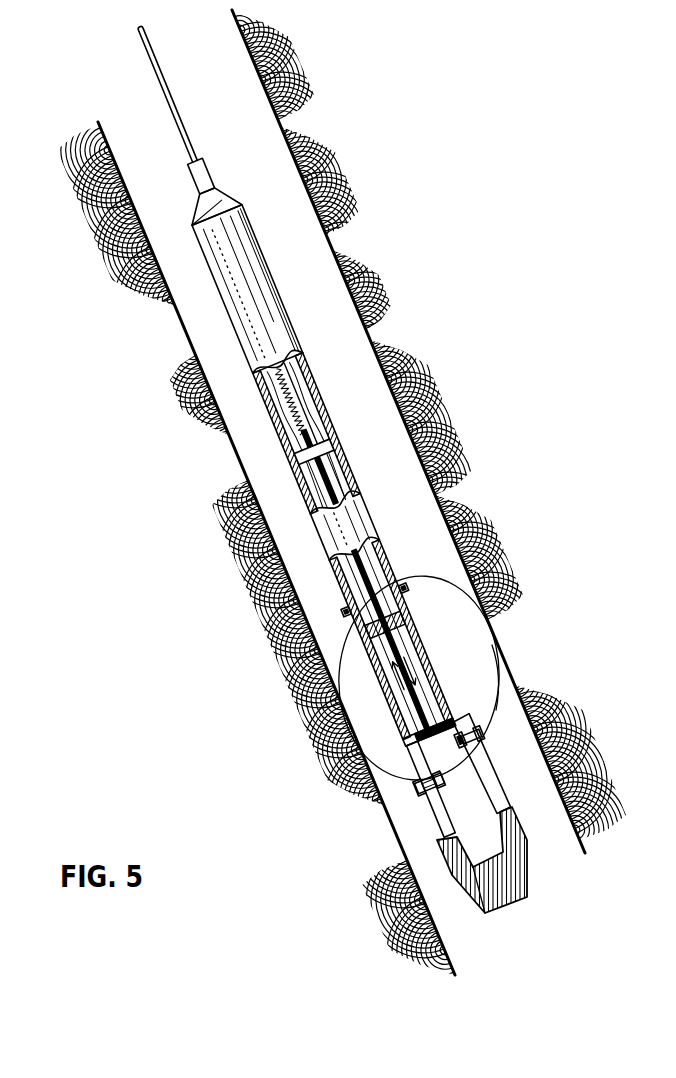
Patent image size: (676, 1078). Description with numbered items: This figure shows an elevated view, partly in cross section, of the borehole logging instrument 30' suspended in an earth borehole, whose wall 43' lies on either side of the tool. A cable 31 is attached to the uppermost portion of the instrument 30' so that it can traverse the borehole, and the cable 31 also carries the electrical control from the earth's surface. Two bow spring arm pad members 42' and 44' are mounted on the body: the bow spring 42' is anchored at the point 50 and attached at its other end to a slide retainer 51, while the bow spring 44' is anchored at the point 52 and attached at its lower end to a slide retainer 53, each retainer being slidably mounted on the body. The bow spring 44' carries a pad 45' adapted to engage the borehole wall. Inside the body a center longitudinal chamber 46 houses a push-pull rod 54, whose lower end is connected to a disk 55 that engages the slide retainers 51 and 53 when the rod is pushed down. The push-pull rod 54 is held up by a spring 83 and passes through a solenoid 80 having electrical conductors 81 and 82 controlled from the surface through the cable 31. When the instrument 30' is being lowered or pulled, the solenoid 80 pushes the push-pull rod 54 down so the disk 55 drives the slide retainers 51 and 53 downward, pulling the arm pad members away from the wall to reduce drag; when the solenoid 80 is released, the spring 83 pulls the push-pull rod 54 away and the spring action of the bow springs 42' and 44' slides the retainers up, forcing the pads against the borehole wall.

The borehole logging instrument 30' is at (237, 264).
The cable 31 is at (166, 92).
The bow spring arm pad member 42' is at (481, 677).
The borehole wall 43' is at (408, 431).
The bow spring arm pad member 44' is at (276, 548).
The pad 45' is at (419, 678).
The center longitudinal chamber 46 is at (390, 645).
The anchor point 50 is at (407, 582).
The slide retainer 51 is at (479, 749).
The anchor point 52 is at (345, 609).
The slide retainer 53 is at (423, 795).
The push-pull rod 54 is at (418, 687).
The disk 55 is at (458, 722).
The solenoid 80 is at (333, 449).
The electrical conductor 81 is at (305, 373).
The electrical conductor 82 is at (262, 381).
The spring 83 is at (318, 394).